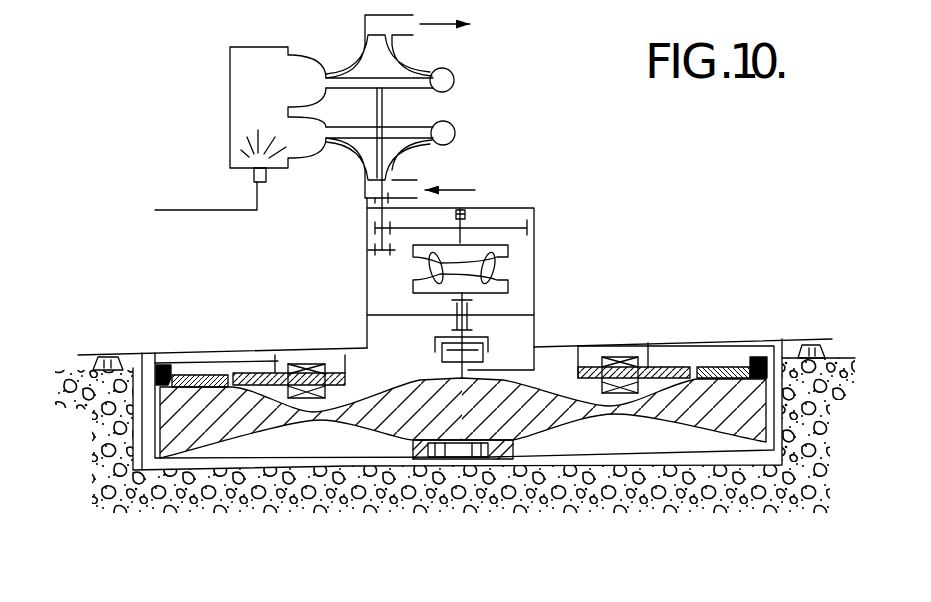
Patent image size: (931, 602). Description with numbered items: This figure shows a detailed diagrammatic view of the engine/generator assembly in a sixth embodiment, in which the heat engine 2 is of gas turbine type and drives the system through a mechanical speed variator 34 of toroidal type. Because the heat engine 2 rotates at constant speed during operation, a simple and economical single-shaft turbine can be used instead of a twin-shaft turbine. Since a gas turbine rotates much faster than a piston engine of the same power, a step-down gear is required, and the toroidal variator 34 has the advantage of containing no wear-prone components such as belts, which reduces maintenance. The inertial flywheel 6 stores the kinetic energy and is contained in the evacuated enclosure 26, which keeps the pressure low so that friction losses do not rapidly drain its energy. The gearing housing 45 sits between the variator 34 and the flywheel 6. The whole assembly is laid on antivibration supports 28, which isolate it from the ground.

The heat engine 2 is at (212, 118).
The inertial flywheel 6 is at (437, 395).
The evacuated enclosure 26 is at (632, 442).
The antivibration supports 28 is at (106, 356).
The mechanical speed variator 34 is at (515, 262).
The gearbox 45 is at (506, 245).